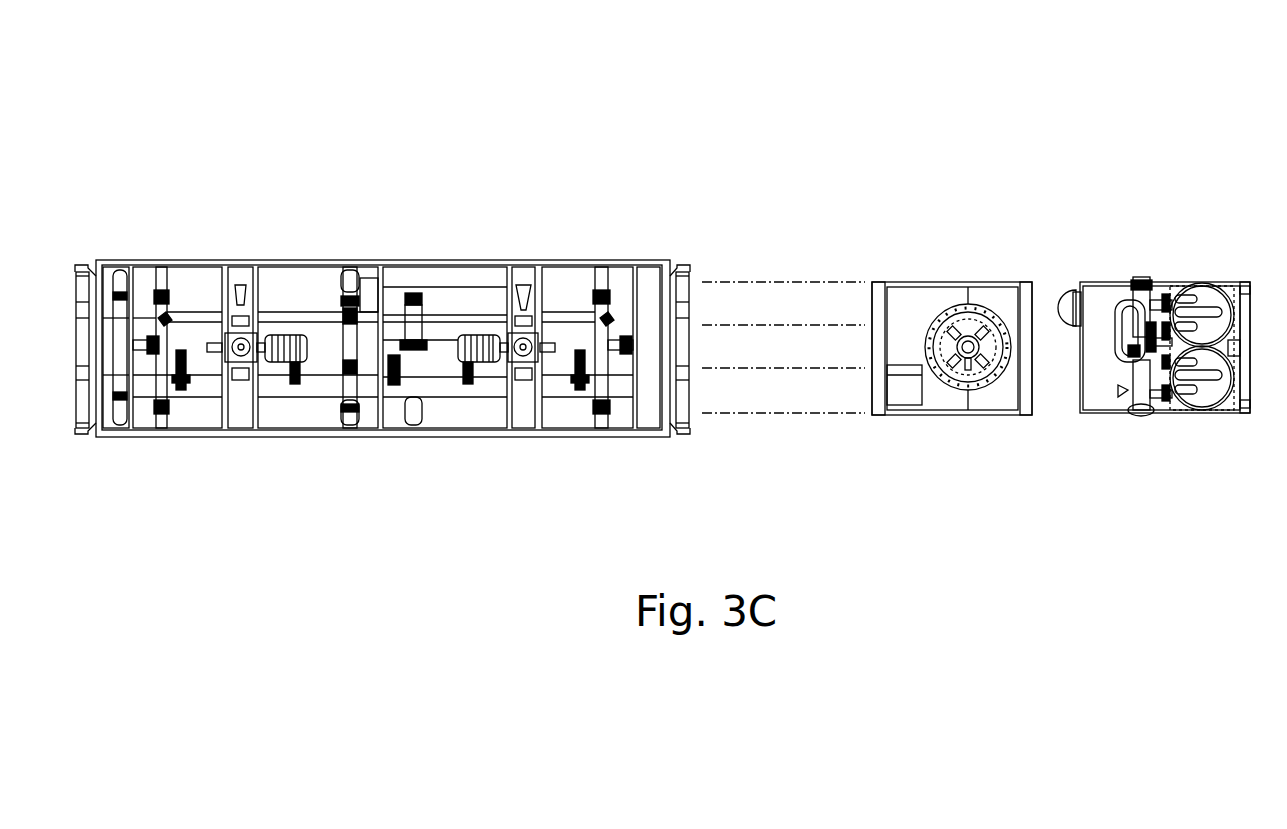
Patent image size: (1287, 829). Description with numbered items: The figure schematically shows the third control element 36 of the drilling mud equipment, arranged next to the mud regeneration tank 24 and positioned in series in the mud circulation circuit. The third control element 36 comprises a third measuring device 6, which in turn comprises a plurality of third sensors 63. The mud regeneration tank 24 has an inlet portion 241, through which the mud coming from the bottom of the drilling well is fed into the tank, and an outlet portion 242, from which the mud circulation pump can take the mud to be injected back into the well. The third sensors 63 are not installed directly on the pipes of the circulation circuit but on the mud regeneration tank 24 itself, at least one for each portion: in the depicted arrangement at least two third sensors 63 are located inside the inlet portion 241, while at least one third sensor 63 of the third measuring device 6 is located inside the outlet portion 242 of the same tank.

The mud regeneration tank 24 is at (835, 130).
The inlet portion 241 is at (141, 260).
The outlet portion 242 is at (1082, 258).
The third control element 36 is at (585, 147).
The third sensor 63 is at (310, 283).
The third measuring device 6 is at (798, 530).